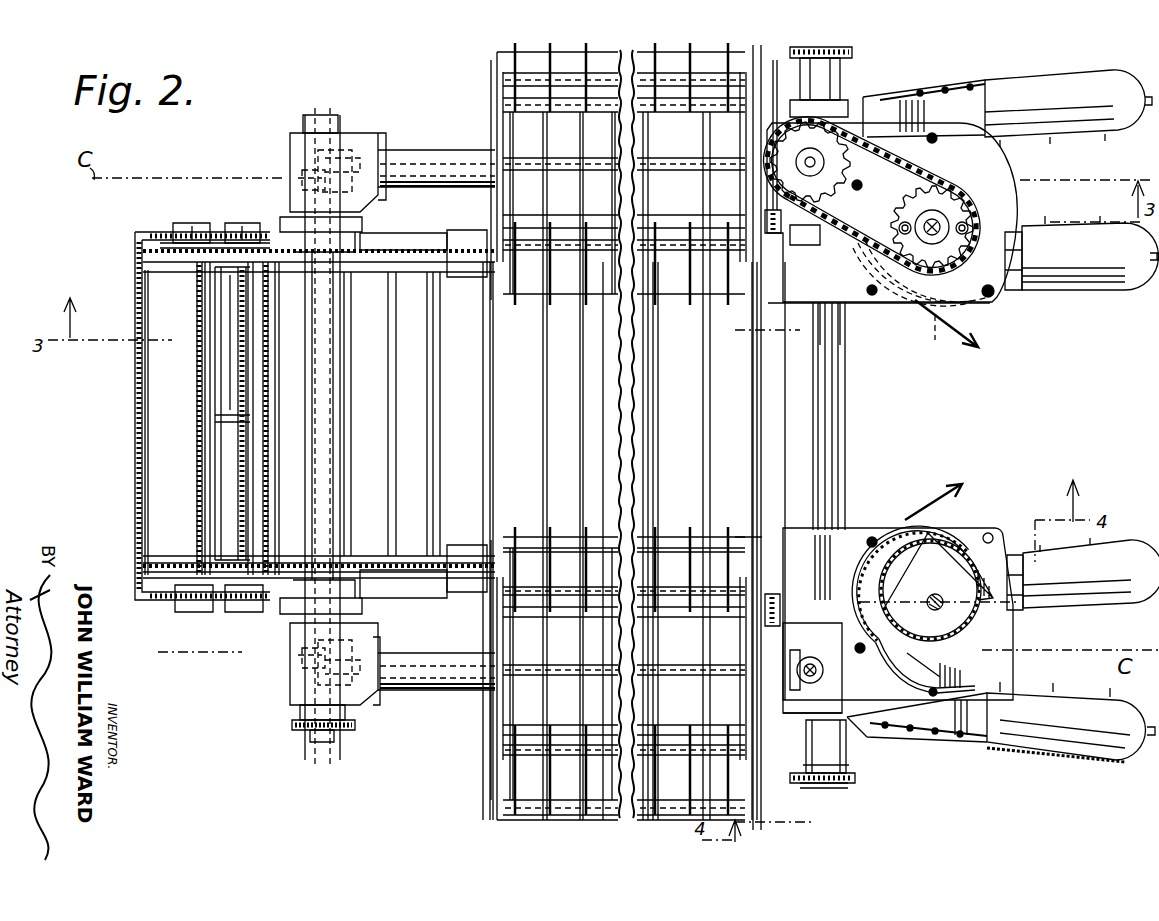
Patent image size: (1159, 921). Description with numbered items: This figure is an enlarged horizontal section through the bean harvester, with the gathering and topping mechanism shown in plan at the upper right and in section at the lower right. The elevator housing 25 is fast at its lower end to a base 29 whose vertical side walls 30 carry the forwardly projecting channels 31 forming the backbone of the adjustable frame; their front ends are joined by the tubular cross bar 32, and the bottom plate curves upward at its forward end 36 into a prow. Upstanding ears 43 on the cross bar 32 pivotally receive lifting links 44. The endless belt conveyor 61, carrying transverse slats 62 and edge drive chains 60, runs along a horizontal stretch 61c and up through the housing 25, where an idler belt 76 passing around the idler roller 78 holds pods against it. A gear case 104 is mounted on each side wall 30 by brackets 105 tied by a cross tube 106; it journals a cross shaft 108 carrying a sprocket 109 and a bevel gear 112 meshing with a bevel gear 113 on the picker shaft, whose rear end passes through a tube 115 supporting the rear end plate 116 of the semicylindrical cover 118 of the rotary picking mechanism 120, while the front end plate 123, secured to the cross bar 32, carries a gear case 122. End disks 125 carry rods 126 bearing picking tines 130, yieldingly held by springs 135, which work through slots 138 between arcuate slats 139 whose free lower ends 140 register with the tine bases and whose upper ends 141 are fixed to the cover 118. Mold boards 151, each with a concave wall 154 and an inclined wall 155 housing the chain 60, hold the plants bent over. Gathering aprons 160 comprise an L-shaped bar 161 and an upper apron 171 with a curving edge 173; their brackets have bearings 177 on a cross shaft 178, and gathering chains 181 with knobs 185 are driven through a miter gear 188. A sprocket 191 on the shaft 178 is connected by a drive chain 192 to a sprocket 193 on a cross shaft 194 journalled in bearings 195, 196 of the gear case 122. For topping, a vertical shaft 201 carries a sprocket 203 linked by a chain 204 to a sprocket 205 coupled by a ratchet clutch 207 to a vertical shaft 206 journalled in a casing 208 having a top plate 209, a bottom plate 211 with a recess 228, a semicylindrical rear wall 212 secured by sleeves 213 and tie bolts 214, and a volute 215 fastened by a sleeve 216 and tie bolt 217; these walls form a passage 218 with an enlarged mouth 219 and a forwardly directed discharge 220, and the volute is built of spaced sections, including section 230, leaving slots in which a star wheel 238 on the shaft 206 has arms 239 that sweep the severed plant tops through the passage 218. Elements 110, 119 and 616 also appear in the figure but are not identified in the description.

The elevator housing 25 is at (136, 433).
The base 29 is at (283, 622).
The vertical side walls 30 is at (347, 272).
The channels 31 is at (430, 238).
The cross bar 32 is at (778, 455).
The forward end of bottom plate 36 is at (843, 462).
The upstanding ears 43 is at (770, 235).
The lifting link 44 is at (760, 215).
The drive chain 60 is at (400, 272).
The endless belt conveyor 61 is at (510, 541).
The horizontal stretch of conveyor 61c is at (673, 541).
The transverse slats 62 is at (488, 450).
The endless idler belt 76 is at (252, 405).
The transverse idler roller 78 is at (236, 468).
The gear case 104 is at (290, 148).
The brackets 105 is at (362, 224).
The cross tube 106 is at (340, 393).
The cross shaft 108 is at (322, 744).
The sprocket 109 is at (292, 722).
The flange 110 is at (300, 732).
The bevel gear 112 is at (305, 182).
The bevel gear 113 is at (336, 136).
The tube 115 is at (440, 185).
The rear end plate 116 is at (500, 76).
The semicylindrical cover 118 is at (500, 58).
The beam 119 is at (395, 165).
The rotary picking mechanism 120 is at (586, 311).
The gear case 122 is at (838, 220).
The front end plate 123 is at (748, 300).
The end disks 125 is at (500, 96).
The rods 126 is at (535, 175).
The picking tines 130 is at (560, 64).
The helical tension spring 135 is at (470, 530).
The slots 138 is at (535, 300).
The arcuate slats 139 is at (665, 300).
The lower ends of slats 140 is at (665, 120).
The upper ends of slats 141 is at (667, 310).
The mold board 151 is at (473, 234).
The arcuate concave wall 154 is at (467, 415).
The inclined wall 155 is at (462, 278).
The gathering aprons 160 is at (1086, 67).
The bar 161 is at (962, 88).
The upper apron 171 is at (1082, 785).
The curving edge 173 is at (1073, 425).
The bearing 177 is at (855, 760).
The cross shaft 178 is at (850, 77).
The chains 181 is at (935, 96).
The knobs 185 is at (1100, 135).
The miter gear 188 is at (850, 115).
The sprocket 191 is at (858, 780).
The drive chain 192 is at (845, 790).
The sprocket 193 is at (852, 53).
The cross shaft 194 is at (810, 155).
The bearing 195 is at (810, 228).
The bearing 196 is at (812, 705).
The vertical shaft 201 is at (813, 176).
The sprocket 203 is at (862, 186).
The chain 204 is at (960, 216).
The sprocket 205 is at (912, 220).
The vertical shaft 206 is at (935, 215).
The ratchet clutch 207 is at (870, 453).
The casing 208 is at (1030, 179).
The top plate 209 is at (855, 320).
The bottom plate 211 is at (850, 528).
The semicylindrical rear wall 212 is at (860, 258).
The vertical sleeves 213 is at (928, 692).
The tie bolts 214 is at (938, 136).
The volute 215 is at (930, 295).
The sleeve 216 is at (970, 548).
The tie bolt 217 is at (987, 285).
The passage 218 is at (867, 649).
The mouth 219 is at (874, 540).
The discharge 220 is at (941, 410).
The recess 228 is at (975, 678).
The volute section 230 is at (986, 534).
The star wheel 238 is at (937, 602).
The arms 239 is at (930, 540).
The liner 616 is at (146, 468).